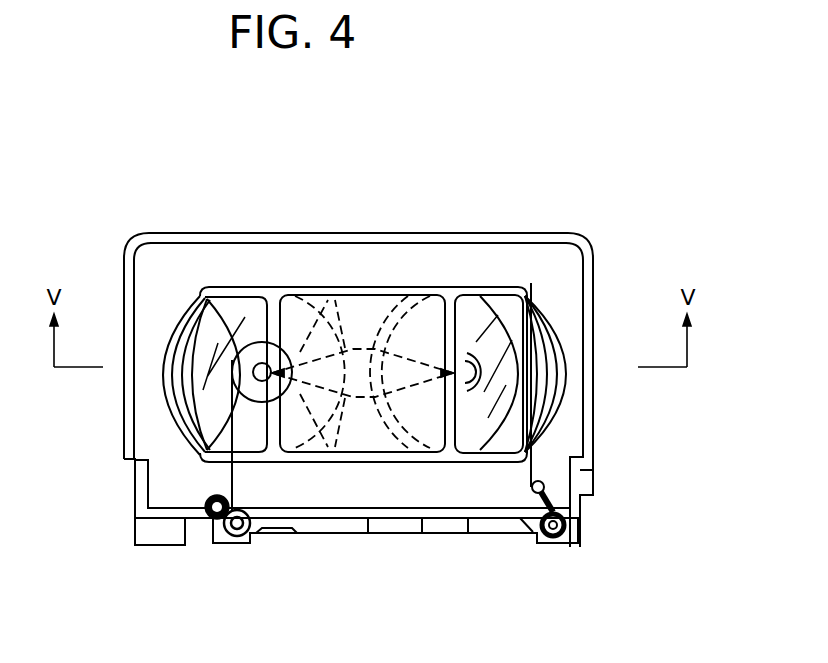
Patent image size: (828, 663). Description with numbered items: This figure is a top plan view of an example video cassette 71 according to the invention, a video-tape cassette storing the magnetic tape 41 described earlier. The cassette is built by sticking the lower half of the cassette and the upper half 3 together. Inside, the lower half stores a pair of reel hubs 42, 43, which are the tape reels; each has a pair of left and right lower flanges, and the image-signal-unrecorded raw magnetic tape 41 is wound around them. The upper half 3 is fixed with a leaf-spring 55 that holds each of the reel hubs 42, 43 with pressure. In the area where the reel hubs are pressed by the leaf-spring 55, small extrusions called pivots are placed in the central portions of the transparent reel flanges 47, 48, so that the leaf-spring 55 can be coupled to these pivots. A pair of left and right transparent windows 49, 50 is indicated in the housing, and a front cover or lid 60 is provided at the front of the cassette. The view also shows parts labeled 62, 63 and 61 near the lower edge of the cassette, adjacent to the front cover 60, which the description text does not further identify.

The upper half 3 is at (386, 262).
The video cassette 71 is at (576, 232).
The transparent window 49 is at (182, 312).
The reel hub 42 is at (263, 338).
The leaf-spring 55 is at (342, 295).
The reel hub 43 is at (525, 292).
The transparent window 50 is at (530, 335).
The transparent reel flange 47 is at (212, 398).
The transparent reel flange 48 is at (542, 388).
The magnetic tape 41 is at (236, 478).
The pin 62 is at (212, 494).
The pivot pin 63 is at (545, 497).
The front cover (lid) 60 is at (238, 540).
The roller 61 is at (550, 545).